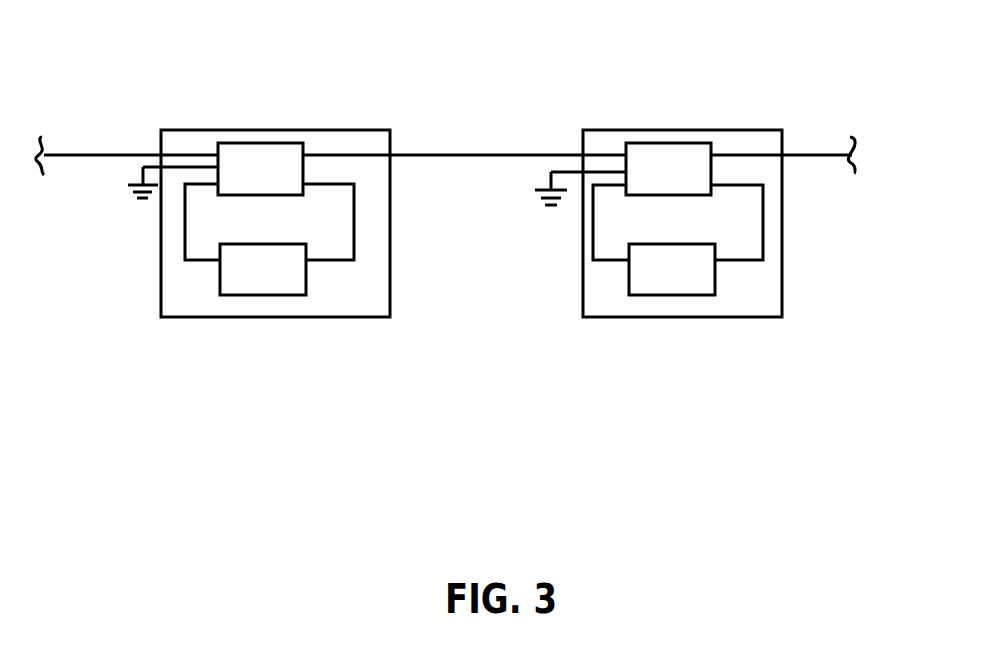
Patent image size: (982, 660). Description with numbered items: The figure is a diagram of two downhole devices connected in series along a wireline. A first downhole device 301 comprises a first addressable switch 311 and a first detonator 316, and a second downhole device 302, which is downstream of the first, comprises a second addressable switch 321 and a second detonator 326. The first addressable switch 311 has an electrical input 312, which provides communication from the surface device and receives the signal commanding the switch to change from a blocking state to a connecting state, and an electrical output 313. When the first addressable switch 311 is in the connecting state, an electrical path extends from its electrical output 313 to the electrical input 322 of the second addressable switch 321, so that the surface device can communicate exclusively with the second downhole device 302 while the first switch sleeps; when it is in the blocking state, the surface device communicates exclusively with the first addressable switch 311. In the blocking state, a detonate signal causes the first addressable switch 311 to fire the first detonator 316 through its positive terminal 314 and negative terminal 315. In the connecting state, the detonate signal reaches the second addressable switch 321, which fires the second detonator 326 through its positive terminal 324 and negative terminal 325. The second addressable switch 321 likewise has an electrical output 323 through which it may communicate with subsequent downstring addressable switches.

The first downhole device 301 is at (313, 130).
The second downhole device 302 is at (722, 130).
The first addressable switch 311 is at (230, 143).
The electrical input 312 is at (218, 152).
The electrical output 313 is at (308, 155).
The positive terminal 314 is at (185, 223).
The negative terminal 315 is at (354, 242).
The first detonator 316 is at (273, 260).
The second addressable switch 321 is at (640, 143).
The electrical input 322 is at (626, 152).
The electrical output 323 is at (712, 155).
The positive terminal 324 is at (593, 219).
The negative terminal 325 is at (763, 237).
The second detonator 326 is at (683, 255).